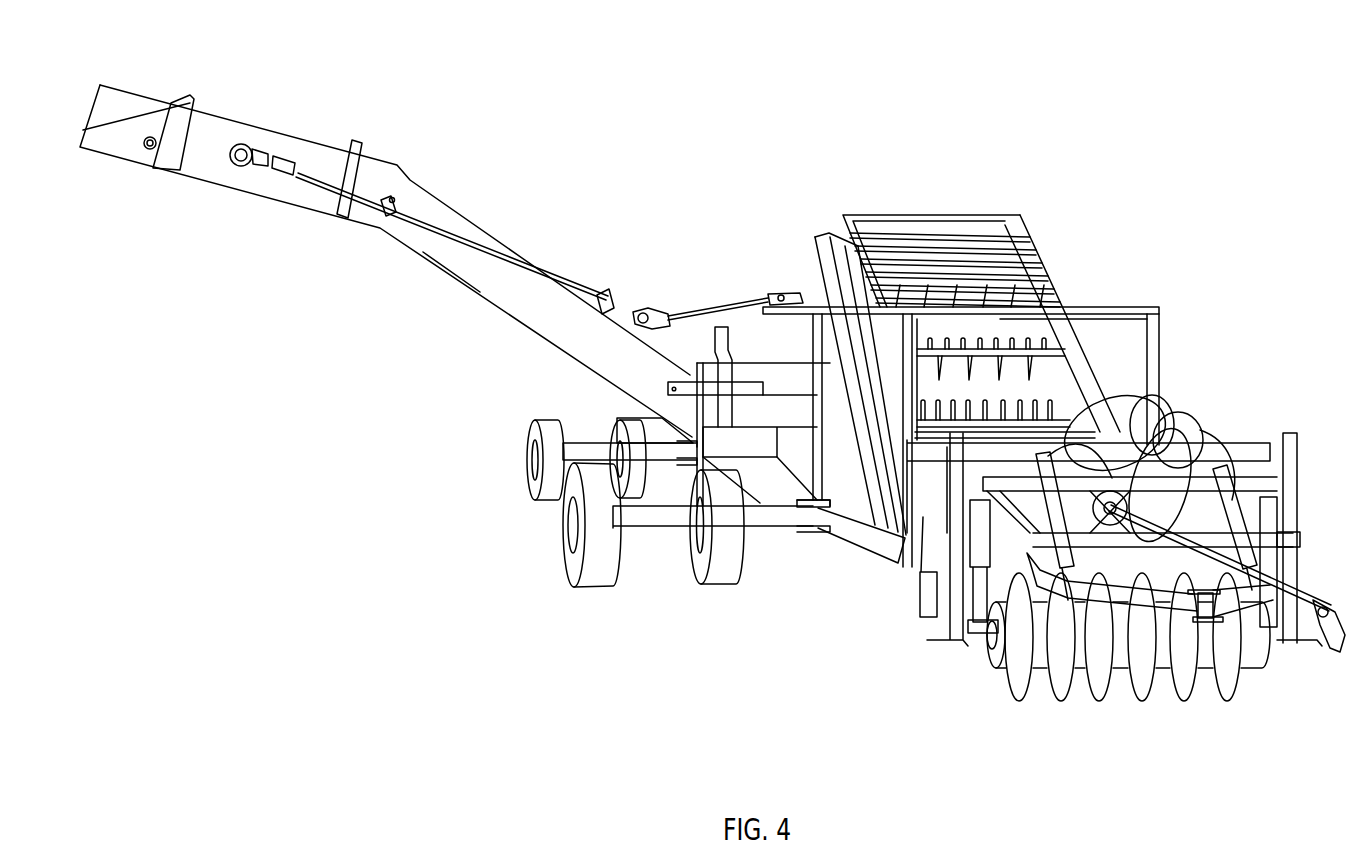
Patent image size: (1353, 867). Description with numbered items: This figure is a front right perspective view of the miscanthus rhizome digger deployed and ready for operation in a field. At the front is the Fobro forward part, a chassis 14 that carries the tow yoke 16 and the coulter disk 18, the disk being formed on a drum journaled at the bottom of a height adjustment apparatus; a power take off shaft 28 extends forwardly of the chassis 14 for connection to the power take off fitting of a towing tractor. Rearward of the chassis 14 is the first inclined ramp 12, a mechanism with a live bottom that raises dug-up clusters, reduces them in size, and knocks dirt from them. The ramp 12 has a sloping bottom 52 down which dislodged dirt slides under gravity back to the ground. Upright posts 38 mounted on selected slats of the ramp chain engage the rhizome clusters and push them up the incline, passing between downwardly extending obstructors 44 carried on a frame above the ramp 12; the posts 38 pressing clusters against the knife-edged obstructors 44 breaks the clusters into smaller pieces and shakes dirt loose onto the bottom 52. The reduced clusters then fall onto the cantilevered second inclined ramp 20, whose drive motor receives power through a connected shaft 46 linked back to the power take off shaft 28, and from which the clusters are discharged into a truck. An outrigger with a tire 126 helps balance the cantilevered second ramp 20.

The first inclined ramp 12 is at (1065, 320).
The forward part chassis 14 is at (923, 483).
The tow yoke 16 is at (1145, 600).
The coulter disk 18 is at (1012, 678).
The second inclined ramp 20 is at (238, 130).
The power take off shaft 28 is at (1295, 622).
The upright posts 38 is at (1035, 398).
The obstructors 44 is at (980, 290).
The connected shaft 46 is at (245, 163).
The sloping bottom 52 is at (1045, 392).
The tire 126 is at (565, 567).